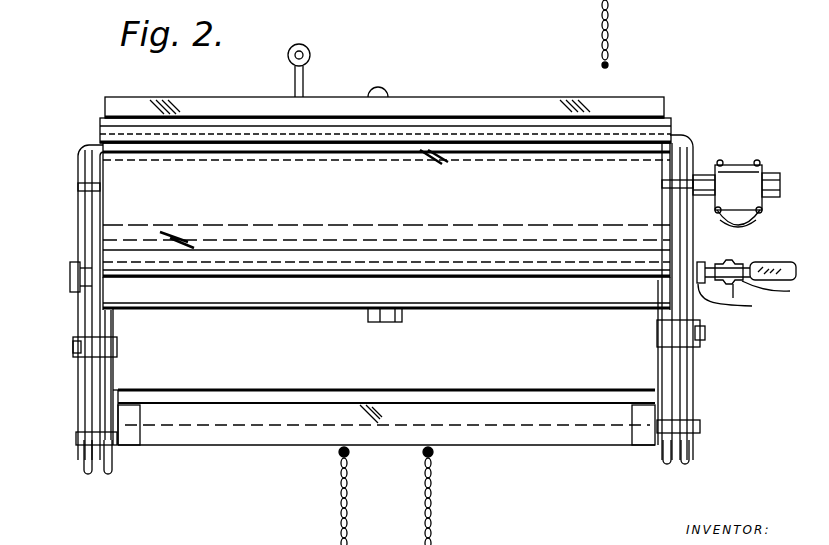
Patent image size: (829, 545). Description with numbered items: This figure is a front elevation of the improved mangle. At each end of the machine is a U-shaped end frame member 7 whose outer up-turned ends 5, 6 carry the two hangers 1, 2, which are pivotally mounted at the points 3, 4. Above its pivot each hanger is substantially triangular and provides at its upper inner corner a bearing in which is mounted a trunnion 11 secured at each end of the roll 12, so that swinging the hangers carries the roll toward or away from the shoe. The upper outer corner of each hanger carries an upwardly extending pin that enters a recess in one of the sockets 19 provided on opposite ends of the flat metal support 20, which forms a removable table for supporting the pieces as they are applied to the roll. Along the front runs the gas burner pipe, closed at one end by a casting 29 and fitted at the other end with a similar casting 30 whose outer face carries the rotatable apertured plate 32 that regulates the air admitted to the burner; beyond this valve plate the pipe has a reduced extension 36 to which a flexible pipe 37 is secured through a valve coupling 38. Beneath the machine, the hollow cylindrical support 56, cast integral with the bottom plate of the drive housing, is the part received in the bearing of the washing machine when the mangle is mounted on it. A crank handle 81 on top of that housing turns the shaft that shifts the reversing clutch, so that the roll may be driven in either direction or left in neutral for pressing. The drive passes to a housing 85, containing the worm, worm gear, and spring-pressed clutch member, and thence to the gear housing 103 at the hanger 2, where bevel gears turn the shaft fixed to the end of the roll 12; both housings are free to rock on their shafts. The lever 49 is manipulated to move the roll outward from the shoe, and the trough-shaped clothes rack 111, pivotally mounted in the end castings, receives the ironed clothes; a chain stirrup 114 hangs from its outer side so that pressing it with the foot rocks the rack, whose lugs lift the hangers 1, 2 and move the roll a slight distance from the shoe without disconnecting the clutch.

The hanger 1 is at (78, 318).
The hanger 2 is at (692, 382).
The pivot point 3 is at (73, 348).
The pivot point 4 is at (705, 333).
The outer up-turned end 5 is at (128, 360).
The outer up-turned end 6 is at (657, 334).
The U-shaped end frame member 7 is at (116, 394).
The trunnion 11 is at (100, 188).
The roll 12 is at (486, 286).
The socket 19 is at (85, 172).
The flat metal support 20 is at (452, 160).
The casting 29 is at (73, 266).
The casting 30 is at (700, 262).
The plate 32 is at (738, 304).
The reduced extension 36 is at (733, 258).
The flexible pipe 37 is at (778, 266).
The valve coupling 38 is at (776, 292).
The lever 49 is at (296, 70).
The hollow cylindrical support 56 is at (368, 318).
The crank handle 81 is at (386, 89).
The housing 85 is at (741, 172).
The gear housing 103 is at (748, 204).
The clothes rack 111 is at (487, 432).
The chain stirrup 114 is at (430, 536).